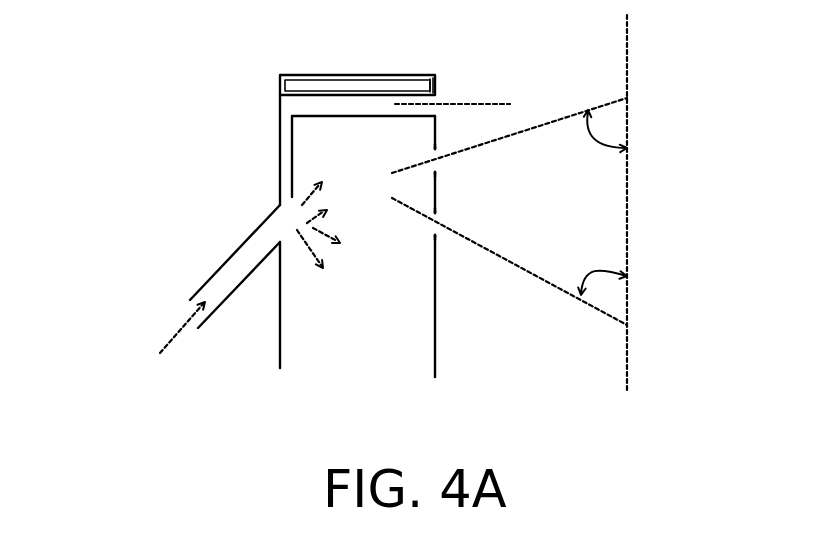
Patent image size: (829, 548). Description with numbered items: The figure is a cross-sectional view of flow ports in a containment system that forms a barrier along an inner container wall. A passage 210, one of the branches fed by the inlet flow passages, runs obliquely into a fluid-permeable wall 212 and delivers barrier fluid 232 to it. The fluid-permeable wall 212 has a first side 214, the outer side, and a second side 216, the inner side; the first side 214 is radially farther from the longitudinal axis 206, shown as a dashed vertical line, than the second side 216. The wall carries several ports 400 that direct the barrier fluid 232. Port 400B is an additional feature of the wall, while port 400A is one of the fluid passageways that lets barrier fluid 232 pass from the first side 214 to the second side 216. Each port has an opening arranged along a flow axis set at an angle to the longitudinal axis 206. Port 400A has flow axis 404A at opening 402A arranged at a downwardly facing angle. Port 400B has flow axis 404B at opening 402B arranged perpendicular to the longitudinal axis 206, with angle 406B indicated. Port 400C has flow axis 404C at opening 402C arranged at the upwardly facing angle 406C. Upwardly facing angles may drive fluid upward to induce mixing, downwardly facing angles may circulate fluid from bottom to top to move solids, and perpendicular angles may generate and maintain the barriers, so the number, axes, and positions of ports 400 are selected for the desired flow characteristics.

The longitudinal axis 206 is at (630, 110).
The passage 210 is at (215, 268).
The fluid-permeable wall 212 is at (280, 76).
The first side 214 is at (281, 180).
The second side 216 is at (435, 350).
The barrier fluid 232 is at (120, 397).
The port 400 is at (386, 237).
The port 400A is at (452, 246).
The port 400B is at (446, 91).
The port 400C is at (451, 133).
The opening 402A is at (434, 237).
The opening 402B is at (425, 74).
The opening 402C is at (435, 148).
The flow axis 404A is at (485, 252).
The flow axis 404B is at (487, 103).
The flow axis 404C is at (452, 152).
The angle 406B is at (584, 270).
The angle 406C is at (588, 130).